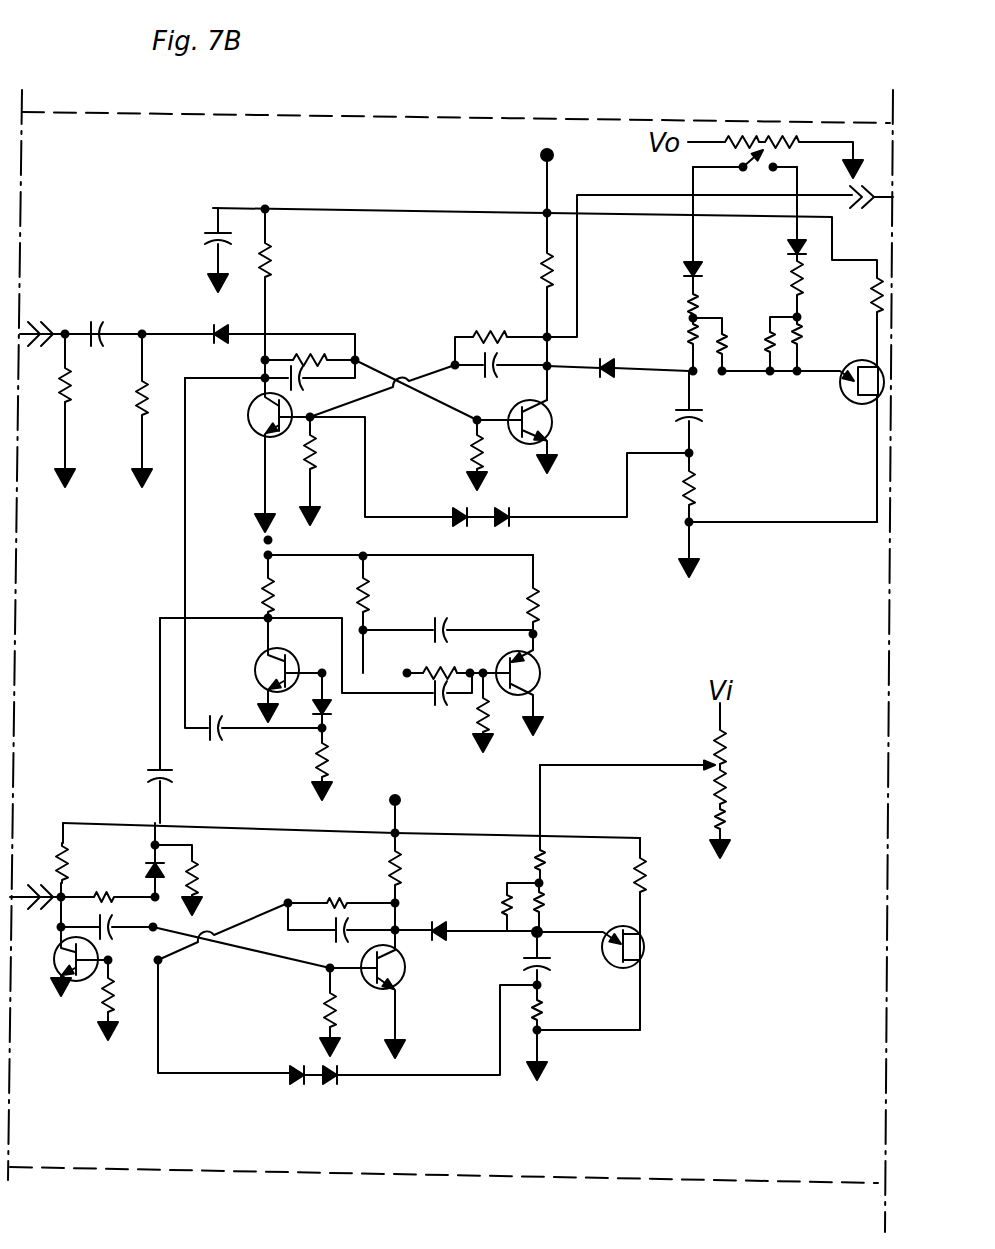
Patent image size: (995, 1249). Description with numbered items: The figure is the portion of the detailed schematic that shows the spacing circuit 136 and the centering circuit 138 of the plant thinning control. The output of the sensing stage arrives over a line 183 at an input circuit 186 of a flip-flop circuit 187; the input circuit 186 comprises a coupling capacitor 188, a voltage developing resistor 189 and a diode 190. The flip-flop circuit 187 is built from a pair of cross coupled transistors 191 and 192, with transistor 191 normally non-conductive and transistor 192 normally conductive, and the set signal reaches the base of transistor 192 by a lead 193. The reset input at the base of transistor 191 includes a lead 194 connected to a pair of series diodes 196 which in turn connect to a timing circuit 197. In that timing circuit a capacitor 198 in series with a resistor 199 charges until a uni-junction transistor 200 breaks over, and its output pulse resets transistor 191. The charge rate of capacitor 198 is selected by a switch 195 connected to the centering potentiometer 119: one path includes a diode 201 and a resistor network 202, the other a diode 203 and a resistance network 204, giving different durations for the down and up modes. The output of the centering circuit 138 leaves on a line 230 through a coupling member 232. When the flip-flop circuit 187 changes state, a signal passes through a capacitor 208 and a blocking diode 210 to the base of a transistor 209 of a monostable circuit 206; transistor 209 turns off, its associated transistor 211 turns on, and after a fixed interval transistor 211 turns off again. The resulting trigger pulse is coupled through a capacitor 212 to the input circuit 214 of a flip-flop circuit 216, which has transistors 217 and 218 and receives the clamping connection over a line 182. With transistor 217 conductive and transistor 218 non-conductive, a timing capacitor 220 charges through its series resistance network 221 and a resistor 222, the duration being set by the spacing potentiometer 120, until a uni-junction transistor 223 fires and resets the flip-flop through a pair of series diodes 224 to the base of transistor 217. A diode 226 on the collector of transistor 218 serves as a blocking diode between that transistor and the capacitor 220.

The centering circuit 138 is at (466, 195).
The line 183 is at (52, 328).
The coupling capacitor 188 is at (102, 322).
The input circuit 186 is at (179, 325).
The voltage developing resistor 189 is at (138, 387).
The diode 190 is at (234, 316).
The transistor 191 is at (255, 437).
The transistor 192 is at (548, 430).
The lead 193 is at (420, 398).
The lead 194 is at (370, 478).
The pair of series diodes 196 is at (495, 535).
The flip-flop circuit 187 is at (405, 330).
The coupling member 232 is at (863, 208).
The line 230 is at (874, 193).
The variable resistance element 119 is at (783, 137).
The switch 195 is at (743, 158).
The diode 201 is at (686, 272).
The resistor network 202 is at (686, 330).
The diode 203 is at (790, 244).
The resistance network 204 is at (787, 308).
The timing circuit 197 is at (794, 397).
The uni-junction transistor 200 is at (848, 402).
The capacitor 198 is at (697, 403).
The resistor 199 is at (697, 486).
The transistor 209 is at (256, 659).
The blocking diode 210 is at (330, 718).
The capacitor 208 is at (225, 739).
The monostable circuit 206 is at (562, 599).
The transistor 211 is at (540, 682).
The capacitor 212 is at (170, 781).
The spacing circuit 136 is at (598, 741).
The line 182 is at (22, 887).
The input circuit 214 is at (204, 853).
The transistor 217 is at (80, 988).
The flip-flop circuit 216 is at (218, 952).
The pair of series diodes 224 is at (330, 1084).
The diode 226 is at (447, 944).
The series resistance network 221 is at (547, 904).
The variable resistance element 120 is at (732, 797).
The timing capacitor 220 is at (544, 961).
The resistor 222 is at (545, 1012).
The uni-junction transistor 223 is at (650, 944).
The transistor 218 is at (400, 987).